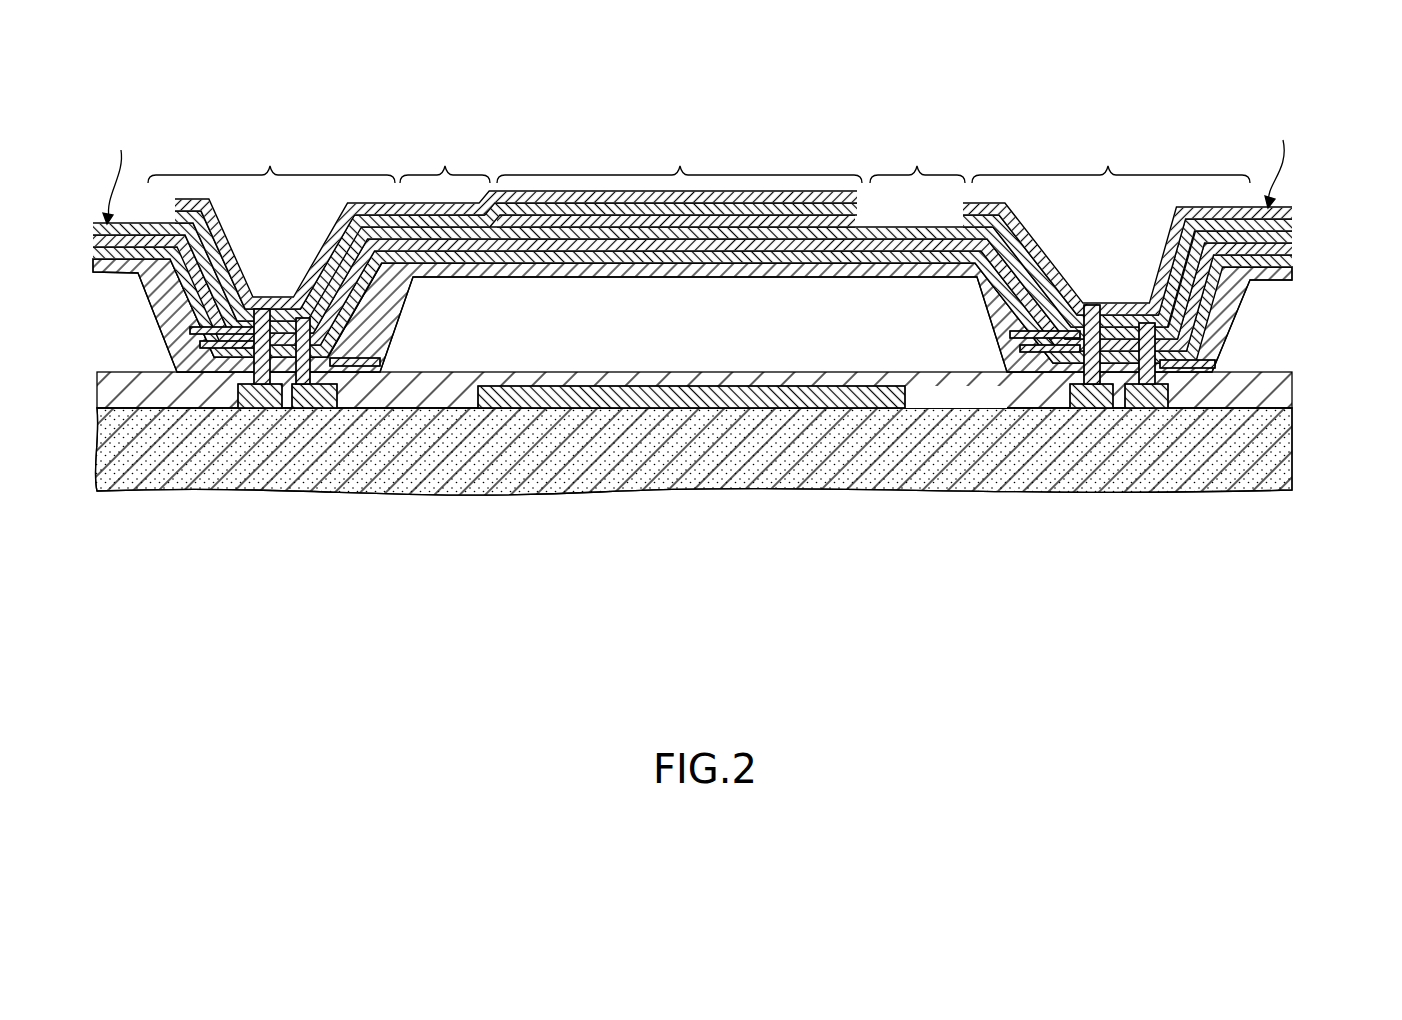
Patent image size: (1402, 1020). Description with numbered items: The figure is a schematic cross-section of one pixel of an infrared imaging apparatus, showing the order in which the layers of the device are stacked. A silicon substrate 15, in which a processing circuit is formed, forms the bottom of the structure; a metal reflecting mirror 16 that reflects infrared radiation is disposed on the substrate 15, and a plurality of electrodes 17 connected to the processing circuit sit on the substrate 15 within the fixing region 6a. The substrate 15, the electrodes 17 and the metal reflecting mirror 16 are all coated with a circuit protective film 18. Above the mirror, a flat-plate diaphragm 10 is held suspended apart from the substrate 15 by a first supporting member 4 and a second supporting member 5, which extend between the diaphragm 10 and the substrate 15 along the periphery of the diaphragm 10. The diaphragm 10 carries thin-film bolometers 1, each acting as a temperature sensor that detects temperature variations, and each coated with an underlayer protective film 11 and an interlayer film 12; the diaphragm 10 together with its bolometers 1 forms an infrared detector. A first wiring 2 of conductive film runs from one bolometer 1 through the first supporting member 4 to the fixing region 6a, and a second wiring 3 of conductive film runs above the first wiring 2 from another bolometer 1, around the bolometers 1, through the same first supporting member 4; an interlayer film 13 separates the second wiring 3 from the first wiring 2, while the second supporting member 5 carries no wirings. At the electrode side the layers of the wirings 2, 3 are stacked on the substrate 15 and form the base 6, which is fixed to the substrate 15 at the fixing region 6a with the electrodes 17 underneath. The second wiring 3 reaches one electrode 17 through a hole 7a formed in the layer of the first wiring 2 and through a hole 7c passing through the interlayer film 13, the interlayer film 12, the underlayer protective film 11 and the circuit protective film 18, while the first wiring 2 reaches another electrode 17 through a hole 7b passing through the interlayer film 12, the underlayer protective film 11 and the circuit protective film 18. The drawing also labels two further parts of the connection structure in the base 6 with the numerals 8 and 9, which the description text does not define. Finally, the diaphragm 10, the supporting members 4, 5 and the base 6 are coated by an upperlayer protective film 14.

The thin-film bolometer 1 is at (740, 232).
The first wiring 2 is at (374, 212).
The second wiring 3 is at (505, 203).
The first supporting member 4 is at (847, 159).
The second supporting member 5 is at (534, 172).
The base 6 is at (699, 157).
The fixing region 6a is at (240, 377).
The hole 7a is at (190, 330).
The hole 7b is at (372, 365).
The hole 7c is at (205, 348).
The via conductor 8 is at (303, 318).
The via conductor 9 is at (262, 309).
The diaphragm 10 is at (679, 157).
The underlayer protective film 11 is at (872, 279).
The interlayer film 12 is at (578, 244).
The interlayer film 13 is at (566, 213).
The upperlayer protective film 14 is at (810, 200).
The substrate 15 is at (743, 470).
The metal reflecting mirror 16 is at (590, 400).
The electrode 17 is at (258, 404).
The circuit protective film 18 is at (958, 400).